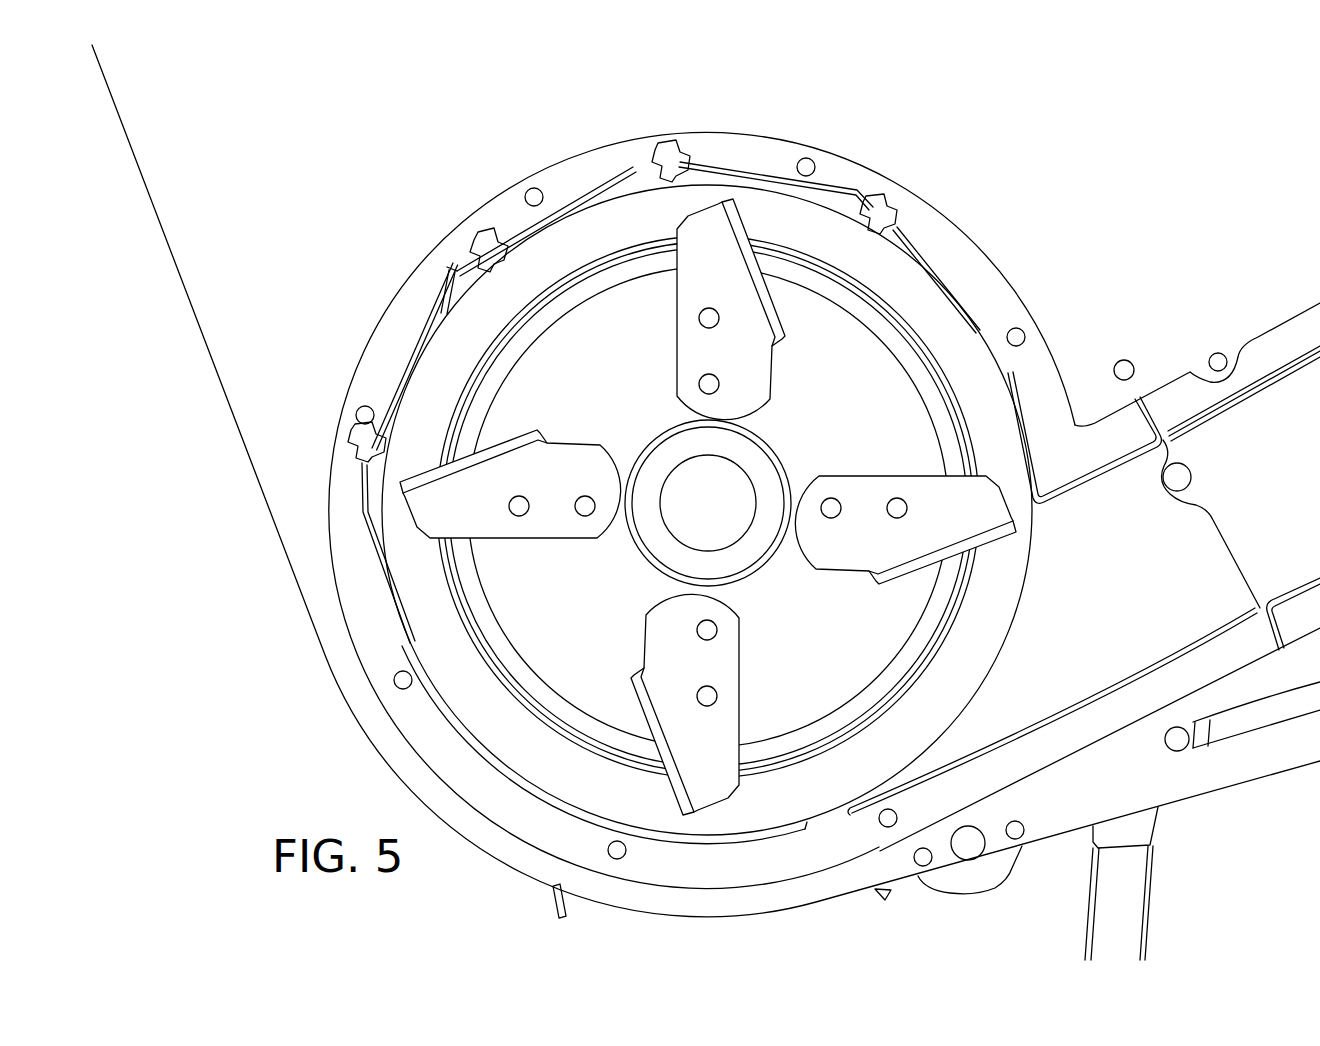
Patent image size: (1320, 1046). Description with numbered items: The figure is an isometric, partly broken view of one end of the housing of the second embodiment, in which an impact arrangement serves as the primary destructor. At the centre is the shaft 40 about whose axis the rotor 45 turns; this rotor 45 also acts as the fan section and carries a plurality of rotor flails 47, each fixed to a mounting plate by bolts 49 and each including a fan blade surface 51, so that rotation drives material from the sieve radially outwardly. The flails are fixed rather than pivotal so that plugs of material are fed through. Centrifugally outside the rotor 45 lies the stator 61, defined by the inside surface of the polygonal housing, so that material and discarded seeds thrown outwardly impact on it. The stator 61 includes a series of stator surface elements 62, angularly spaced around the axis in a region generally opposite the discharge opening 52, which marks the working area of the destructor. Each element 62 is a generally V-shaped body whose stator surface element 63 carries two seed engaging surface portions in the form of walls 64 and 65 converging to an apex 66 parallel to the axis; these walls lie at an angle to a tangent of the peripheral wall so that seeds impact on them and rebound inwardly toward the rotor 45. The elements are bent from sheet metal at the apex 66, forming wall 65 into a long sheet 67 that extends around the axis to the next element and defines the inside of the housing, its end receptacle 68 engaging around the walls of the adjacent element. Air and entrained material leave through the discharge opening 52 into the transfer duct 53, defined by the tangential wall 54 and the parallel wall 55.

The shaft 40 is at (703, 503).
The rotor 45 is at (582, 624).
The rotor flails 47 is at (755, 360).
The bolts 49 is at (712, 696).
The fan blade surface 51 is at (947, 553).
The discharge opening 52 is at (1060, 677).
The transfer duct 53 is at (1276, 511).
The tangential wall 54 is at (1215, 637).
The wall 55 is at (1233, 400).
The stator 61 is at (427, 306).
The stator surface elements 62 is at (457, 267).
The stator surface element 63 is at (360, 516).
The wall 64 is at (620, 178).
The wall 65 is at (660, 152).
The apex 66 is at (365, 468).
The long sheet 67 is at (827, 186).
The end receptacle 68 is at (900, 228).